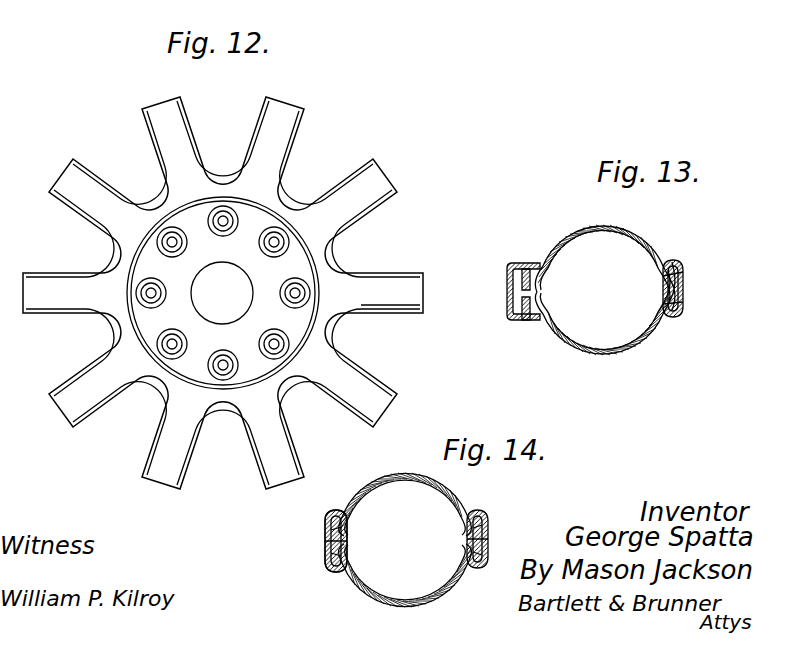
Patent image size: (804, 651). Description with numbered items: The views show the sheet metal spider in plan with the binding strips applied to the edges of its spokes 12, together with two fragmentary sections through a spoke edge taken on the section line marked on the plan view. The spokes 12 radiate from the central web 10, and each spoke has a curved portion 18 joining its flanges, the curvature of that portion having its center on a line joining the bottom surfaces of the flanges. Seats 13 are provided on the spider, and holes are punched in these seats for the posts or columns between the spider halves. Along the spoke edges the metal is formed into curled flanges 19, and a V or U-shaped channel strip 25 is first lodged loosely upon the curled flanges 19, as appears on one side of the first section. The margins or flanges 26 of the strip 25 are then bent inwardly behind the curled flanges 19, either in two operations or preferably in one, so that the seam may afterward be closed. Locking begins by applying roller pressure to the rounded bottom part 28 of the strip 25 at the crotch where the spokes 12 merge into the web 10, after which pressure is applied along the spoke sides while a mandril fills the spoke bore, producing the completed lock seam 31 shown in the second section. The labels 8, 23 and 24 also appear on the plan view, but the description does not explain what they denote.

In FIG. 12, the central bore 8 is at (222, 293).
In FIG. 12, the web 10 is at (317, 247).
In FIG. 12, the spoke 12 is at (275, 113).
In FIG. 14, the spoke 12 is at (438, 488).
In FIG. 12, the seat 13 is at (214, 234).
In FIG. 13, the curved portion 18 is at (603, 290).
In FIG. 14, the curved portion 18 is at (403, 478).
In FIG. 13, the curled flange 19 is at (525, 264).
In FIG. 14, the curled flange 19 is at (340, 512).
In FIG. 12, the bolt hole 23 is at (263, 246).
In FIG. 12, the bolt hole 24 is at (284, 253).
In FIG. 12, the channel strip 25 is at (188, 110).
In FIG. 13, the channel strip 25 is at (507, 278).
In FIG. 14, the channel strip 25 is at (328, 540).
In FIG. 13, the margin or flange of channel strip 26 is at (540, 273).
In FIG. 14, the margin or flange of channel strip 26 is at (347, 526).
In FIG. 12, the rounded bottom part 28 is at (338, 325).
In FIG. 14, the lock seam 31 is at (308, 525).